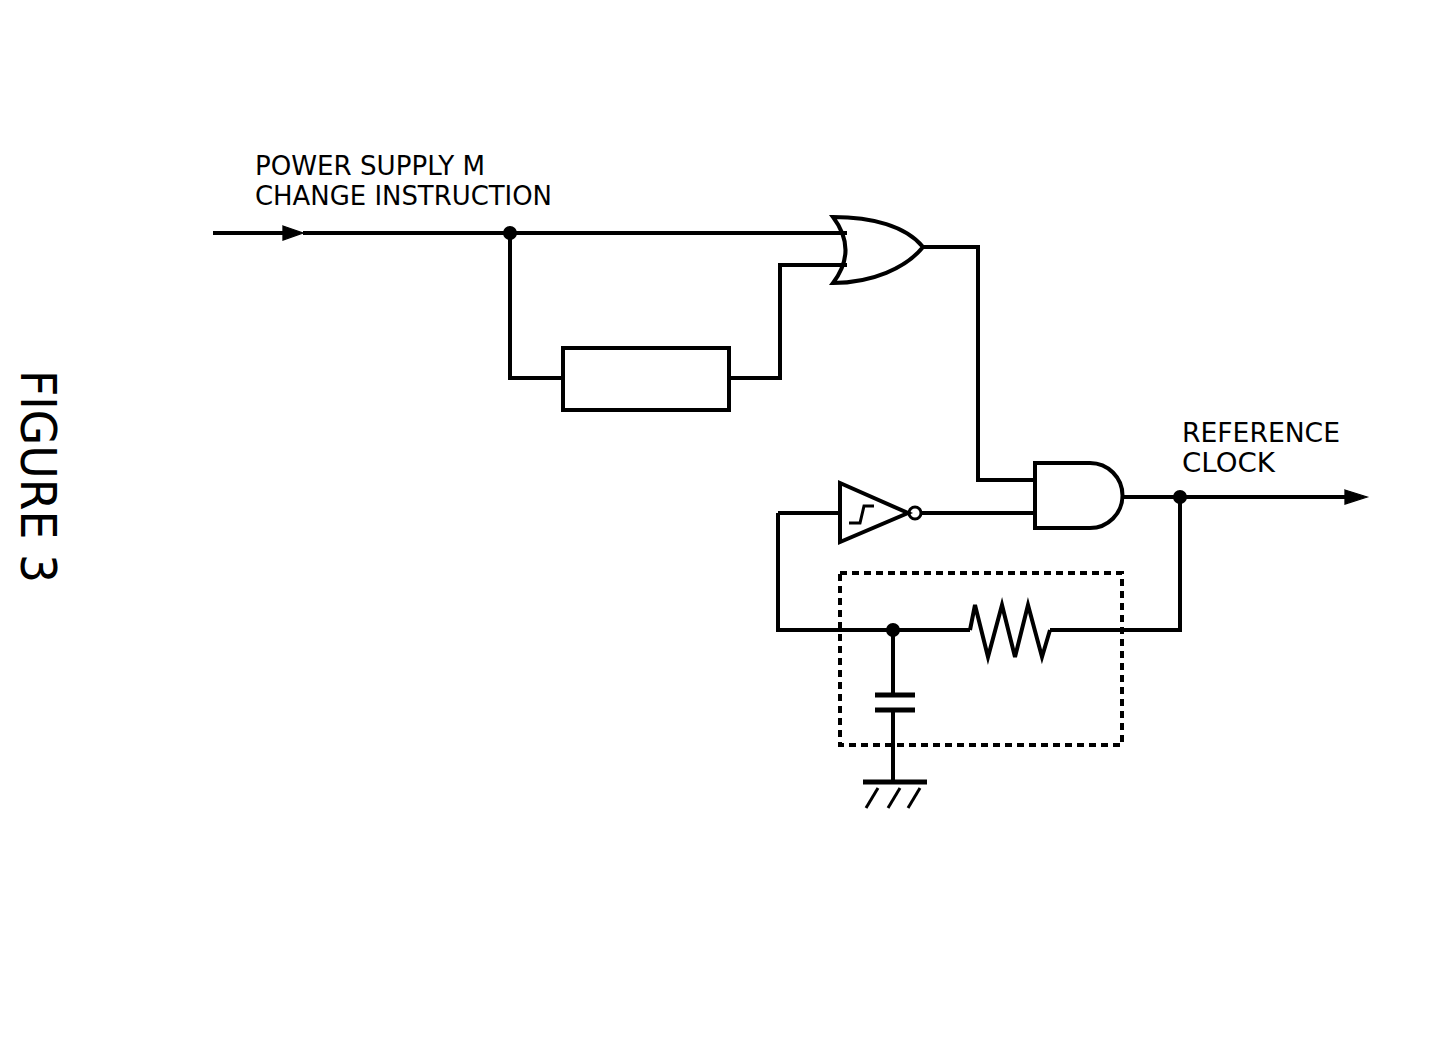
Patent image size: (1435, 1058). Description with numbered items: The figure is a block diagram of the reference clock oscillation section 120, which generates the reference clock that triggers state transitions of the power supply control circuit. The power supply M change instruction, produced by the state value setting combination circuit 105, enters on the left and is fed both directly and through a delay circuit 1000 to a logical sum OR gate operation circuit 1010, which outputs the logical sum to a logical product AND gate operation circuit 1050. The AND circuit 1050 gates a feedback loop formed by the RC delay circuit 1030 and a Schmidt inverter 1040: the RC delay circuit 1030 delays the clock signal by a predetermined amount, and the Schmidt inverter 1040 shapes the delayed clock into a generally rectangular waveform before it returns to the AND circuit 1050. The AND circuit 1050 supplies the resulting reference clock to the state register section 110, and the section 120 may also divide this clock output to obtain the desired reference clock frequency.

The state value setting combination circuit 105 is at (208, 253).
The state register section 110 is at (1421, 516).
The reference clock oscillation section 120 is at (1298, 214).
The delay circuit 1000 is at (662, 323).
The logical sum (OR gate) operation circuit 1010 is at (877, 193).
The RC delay circuit 1030 is at (1122, 736).
The Schmidt inverter 1040 is at (887, 470).
The logical product (AND gate) operation circuit 1050 is at (1062, 463).